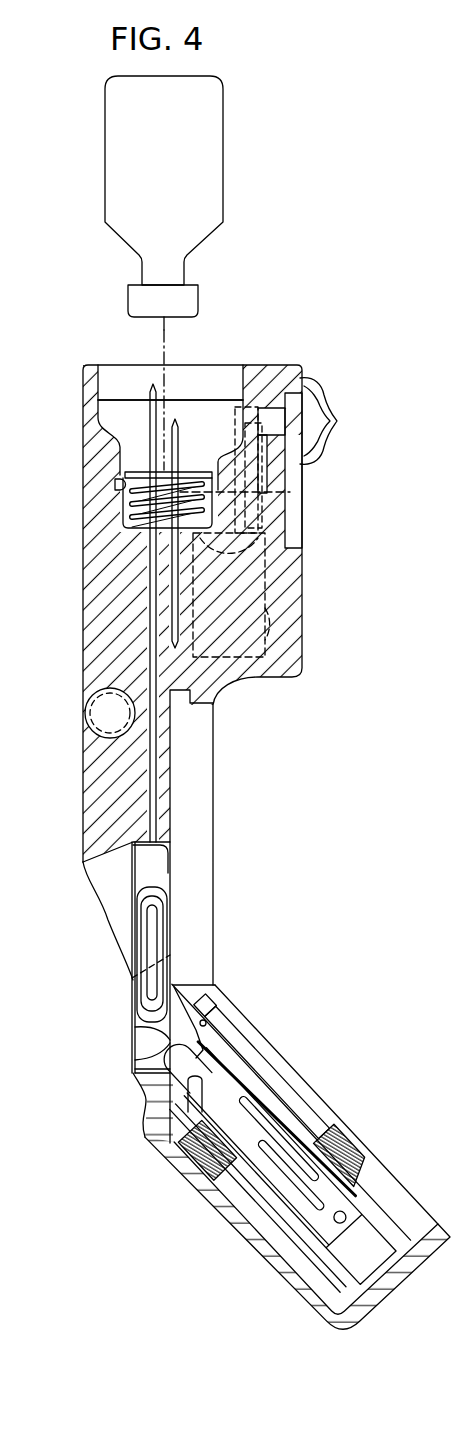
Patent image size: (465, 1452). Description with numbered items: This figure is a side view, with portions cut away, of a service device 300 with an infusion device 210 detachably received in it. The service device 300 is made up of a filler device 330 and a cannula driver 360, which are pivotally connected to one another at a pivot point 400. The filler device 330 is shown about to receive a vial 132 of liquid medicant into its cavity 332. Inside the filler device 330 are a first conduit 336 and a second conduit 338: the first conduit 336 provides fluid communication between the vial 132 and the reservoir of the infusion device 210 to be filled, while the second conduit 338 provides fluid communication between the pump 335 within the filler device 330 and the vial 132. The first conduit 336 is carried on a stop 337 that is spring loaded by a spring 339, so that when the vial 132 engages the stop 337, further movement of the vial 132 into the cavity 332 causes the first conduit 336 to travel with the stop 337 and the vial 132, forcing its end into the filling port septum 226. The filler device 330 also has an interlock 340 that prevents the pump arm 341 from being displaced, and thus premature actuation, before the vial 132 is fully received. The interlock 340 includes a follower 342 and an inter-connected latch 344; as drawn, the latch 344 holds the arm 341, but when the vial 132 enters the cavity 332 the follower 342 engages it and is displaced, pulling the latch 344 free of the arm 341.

The vial 132 is at (115, 178).
The service device 300 is at (317, 362).
The filler device 330 is at (327, 548).
The cavity 332 is at (125, 378).
The arm 341 is at (313, 400).
The interlock 340 is at (287, 472).
The latch 344 is at (266, 480).
The stop 337 is at (122, 473).
The follower 342 is at (114, 484).
The spring 339 is at (123, 510).
The first conduit 336 is at (148, 568).
The second conduit 338 is at (168, 592).
The pump 335 is at (268, 620).
The filling port septum 226 is at (138, 845).
The infusion device 210 is at (132, 995).
The pivot point 400 is at (206, 1021).
The cannula driver 360 is at (303, 1068).